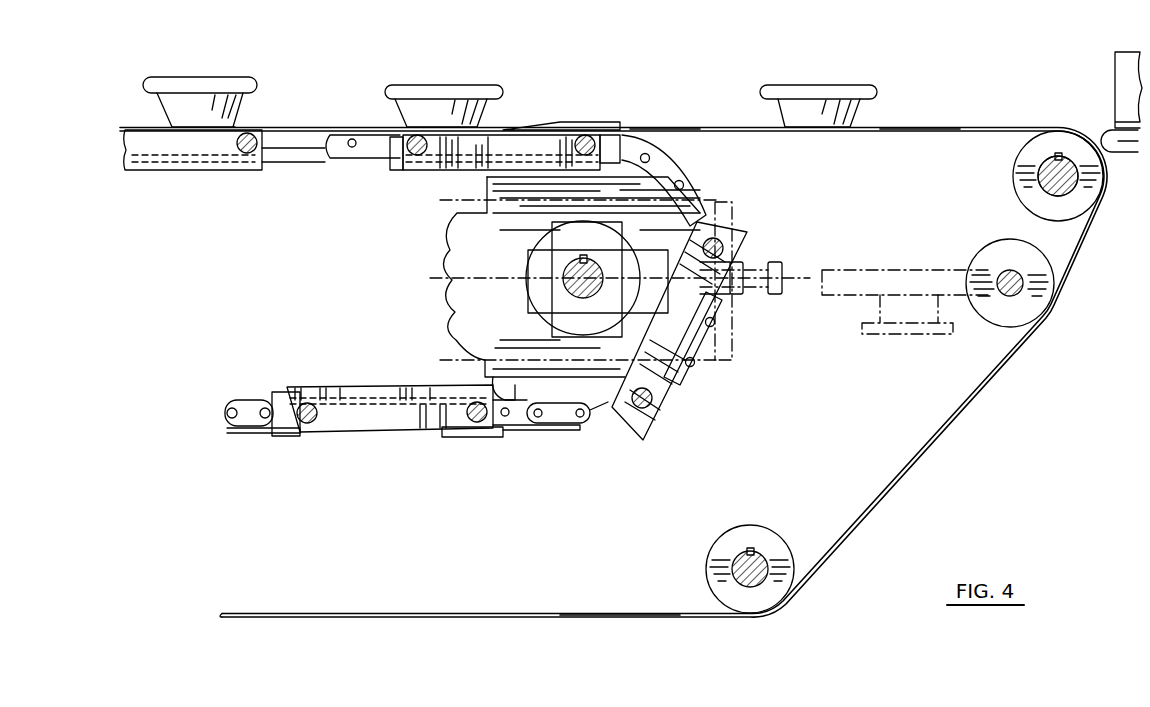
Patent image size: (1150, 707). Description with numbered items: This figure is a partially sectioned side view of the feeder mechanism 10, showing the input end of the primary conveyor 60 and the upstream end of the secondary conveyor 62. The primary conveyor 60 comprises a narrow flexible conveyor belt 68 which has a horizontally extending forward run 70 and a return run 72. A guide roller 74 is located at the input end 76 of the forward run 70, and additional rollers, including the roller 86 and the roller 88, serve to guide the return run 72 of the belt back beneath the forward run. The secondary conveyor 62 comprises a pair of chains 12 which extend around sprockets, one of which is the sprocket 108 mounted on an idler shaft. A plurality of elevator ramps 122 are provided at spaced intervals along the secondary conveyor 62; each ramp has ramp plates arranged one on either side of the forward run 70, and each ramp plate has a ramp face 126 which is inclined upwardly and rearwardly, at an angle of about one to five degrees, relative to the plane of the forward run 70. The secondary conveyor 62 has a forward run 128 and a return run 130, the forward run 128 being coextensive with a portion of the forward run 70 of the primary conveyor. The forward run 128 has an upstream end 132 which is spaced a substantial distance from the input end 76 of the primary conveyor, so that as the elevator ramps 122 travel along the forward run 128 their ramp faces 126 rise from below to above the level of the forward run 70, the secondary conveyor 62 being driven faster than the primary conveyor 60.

The feeder mechanism 10 is at (526, 92).
The chains 12 is at (185, 77).
The primary conveyor 60 is at (718, 128).
The secondary conveyor 62 is at (378, 160).
The conveyor belt 68 is at (922, 128).
The forward run 70 is at (668, 128).
The return run 72 is at (615, 610).
The guide roller 74 is at (1025, 158).
The input end 76 is at (1078, 130).
The roller 86 is at (777, 545).
The roller 88 is at (985, 270).
The sprocket 108 is at (445, 270).
The elevator ramps 122 is at (452, 168).
The ramp face 126 is at (565, 122).
The forward run 128 is at (206, 170).
The return run 130 is at (258, 395).
The upstream end 132 is at (668, 165).